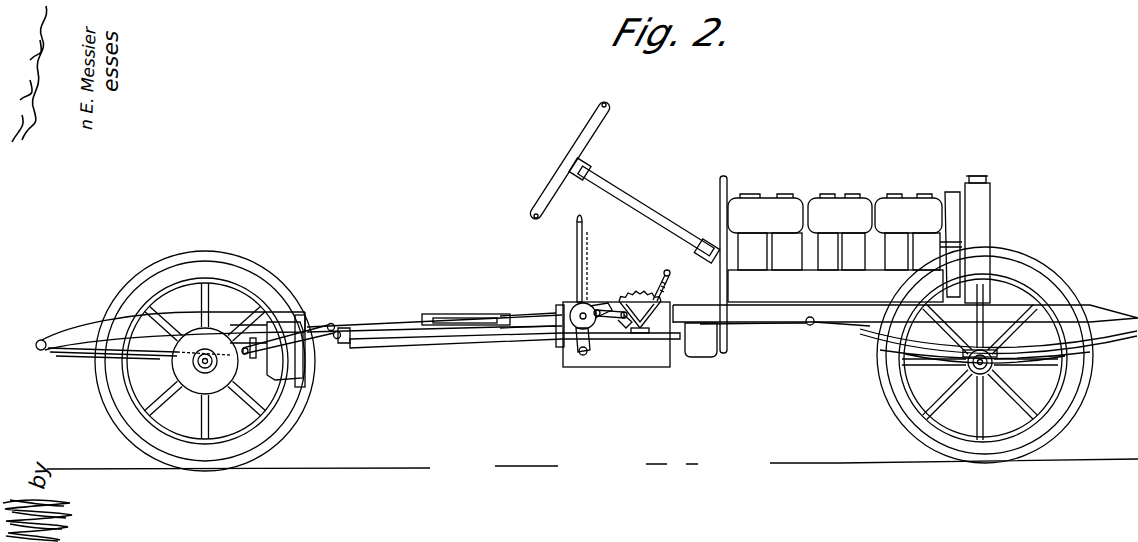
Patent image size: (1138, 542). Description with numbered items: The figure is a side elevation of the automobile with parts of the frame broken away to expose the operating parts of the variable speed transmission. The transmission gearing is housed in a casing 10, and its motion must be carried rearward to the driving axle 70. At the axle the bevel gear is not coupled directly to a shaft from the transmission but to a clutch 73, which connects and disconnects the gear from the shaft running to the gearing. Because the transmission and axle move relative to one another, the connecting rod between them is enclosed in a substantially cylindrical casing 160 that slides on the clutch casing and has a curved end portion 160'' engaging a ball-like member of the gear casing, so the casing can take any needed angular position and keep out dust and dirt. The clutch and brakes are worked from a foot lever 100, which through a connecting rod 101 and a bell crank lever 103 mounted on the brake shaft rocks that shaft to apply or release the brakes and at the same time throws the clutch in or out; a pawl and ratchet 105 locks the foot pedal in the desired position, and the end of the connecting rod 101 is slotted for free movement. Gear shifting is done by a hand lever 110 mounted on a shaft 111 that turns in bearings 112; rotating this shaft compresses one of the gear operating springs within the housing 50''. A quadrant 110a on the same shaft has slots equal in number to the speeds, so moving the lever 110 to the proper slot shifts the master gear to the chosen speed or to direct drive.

The casing 10 is at (653, 364).
The housing 50'' is at (466, 306).
The driving axle 70 is at (205, 364).
The clutch 73 is at (292, 382).
The foot lever 100 is at (661, 289).
The connecting rod 101 is at (370, 327).
The bell crank lever 103 is at (335, 340).
The pawl and ratchet 105 is at (655, 295).
The hand lever 110 is at (576, 262).
The quadrant 110a is at (584, 300).
The shaft 111 is at (583, 355).
The bearings 112 is at (590, 349).
The casing 160 is at (515, 353).
The curved end portion 160'' is at (532, 320).